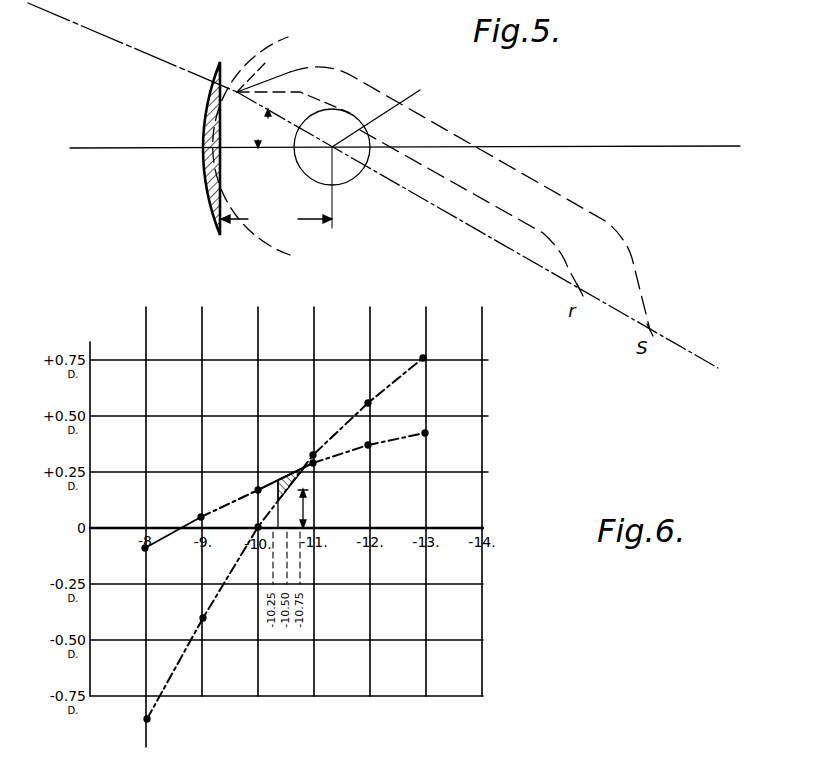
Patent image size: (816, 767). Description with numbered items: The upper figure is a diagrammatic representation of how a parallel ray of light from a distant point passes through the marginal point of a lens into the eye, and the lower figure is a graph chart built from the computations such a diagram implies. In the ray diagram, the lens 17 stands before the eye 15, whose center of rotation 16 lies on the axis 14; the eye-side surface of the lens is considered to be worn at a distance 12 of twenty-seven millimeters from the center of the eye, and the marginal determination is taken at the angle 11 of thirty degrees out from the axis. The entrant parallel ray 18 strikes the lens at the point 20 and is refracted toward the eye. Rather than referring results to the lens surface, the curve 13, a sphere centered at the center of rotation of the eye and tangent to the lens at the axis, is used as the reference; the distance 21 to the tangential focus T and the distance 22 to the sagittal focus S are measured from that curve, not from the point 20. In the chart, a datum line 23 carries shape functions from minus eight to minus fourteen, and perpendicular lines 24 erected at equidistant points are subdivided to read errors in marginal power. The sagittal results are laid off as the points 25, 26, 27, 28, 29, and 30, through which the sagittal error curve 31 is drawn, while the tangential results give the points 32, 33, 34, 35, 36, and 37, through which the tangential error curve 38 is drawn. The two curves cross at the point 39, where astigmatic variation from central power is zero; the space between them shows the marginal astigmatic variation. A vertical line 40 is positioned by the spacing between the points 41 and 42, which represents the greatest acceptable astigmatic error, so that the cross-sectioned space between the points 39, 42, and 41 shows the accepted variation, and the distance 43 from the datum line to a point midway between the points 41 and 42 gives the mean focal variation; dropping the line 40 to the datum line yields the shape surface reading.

In FIG. 5, the angle 11 is at (260, 128).
In FIG. 5, the distance 12 is at (276, 188).
In FIG. 5, the curve 13 is at (291, 41).
In FIG. 5, the axis 14 is at (222, 150).
In FIG. 5, the eye 15 is at (352, 178).
In FIG. 5, the center of rotation of the eye 16 is at (390, 113).
In FIG. 5, the lens 17 is at (206, 112).
In FIG. 5, the entrant parallel ray 18 is at (124, 44).
In FIG. 5, the point 20 is at (236, 86).
In FIG. 5, the distance 21 is at (420, 162).
In FIG. 5, the distance 22 is at (481, 146).
In FIG. 6, the datum line 23 is at (483, 527).
In FIG. 6, the perpendicular lines 24 is at (145, 340).
In FIG. 6, the point 25 is at (143, 551).
In FIG. 6, the point 26 is at (199, 516).
In FIG. 6, the point 27 is at (257, 488).
In FIG. 6, the point 28 is at (316, 467).
In FIG. 6, the point 29 is at (370, 444).
In FIG. 6, the point 30 is at (428, 435).
In FIG. 6, the sagittal error curve 31 is at (168, 534).
In FIG. 6, the point 32 is at (152, 719).
In FIG. 6, the point 33 is at (201, 619).
In FIG. 6, the point 34 is at (256, 527).
In FIG. 6, the point 35 is at (313, 453).
In FIG. 6, the point 36 is at (368, 401).
In FIG. 6, the point 37 is at (423, 356).
In FIG. 6, the tangential error curve 38 is at (184, 655).
In FIG. 6, the crossing point 39 is at (298, 470).
In FIG. 6, the vertical line 40 is at (248, 493).
In FIG. 6, the point 41 is at (298, 478).
In FIG. 6, the point 42 is at (268, 481).
In FIG. 6, the distance 43 is at (312, 510).